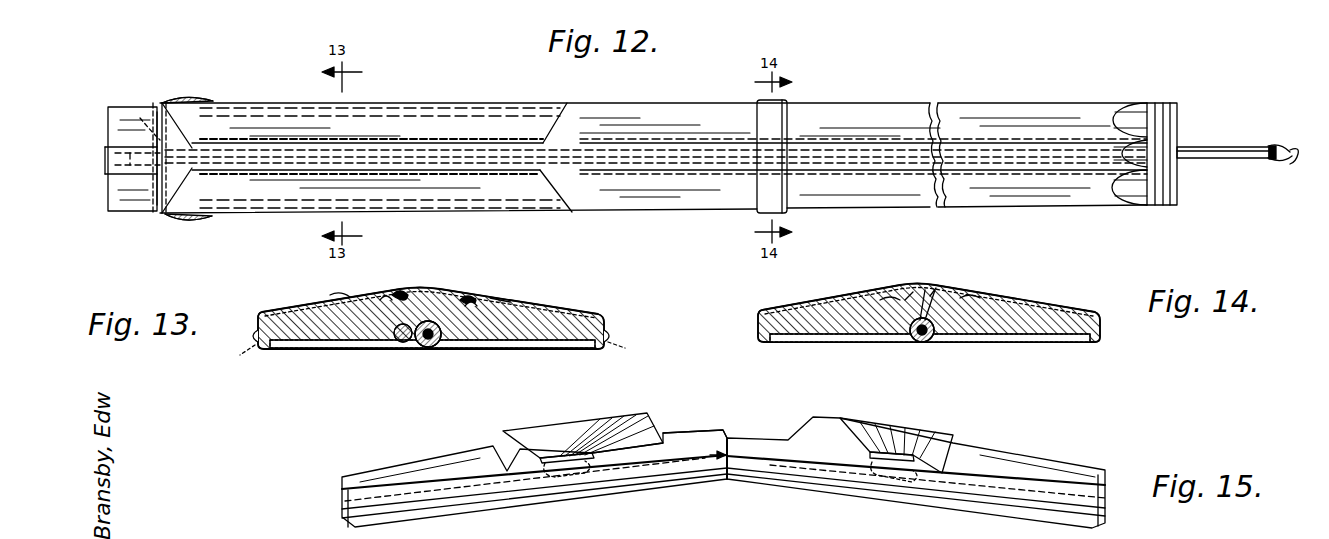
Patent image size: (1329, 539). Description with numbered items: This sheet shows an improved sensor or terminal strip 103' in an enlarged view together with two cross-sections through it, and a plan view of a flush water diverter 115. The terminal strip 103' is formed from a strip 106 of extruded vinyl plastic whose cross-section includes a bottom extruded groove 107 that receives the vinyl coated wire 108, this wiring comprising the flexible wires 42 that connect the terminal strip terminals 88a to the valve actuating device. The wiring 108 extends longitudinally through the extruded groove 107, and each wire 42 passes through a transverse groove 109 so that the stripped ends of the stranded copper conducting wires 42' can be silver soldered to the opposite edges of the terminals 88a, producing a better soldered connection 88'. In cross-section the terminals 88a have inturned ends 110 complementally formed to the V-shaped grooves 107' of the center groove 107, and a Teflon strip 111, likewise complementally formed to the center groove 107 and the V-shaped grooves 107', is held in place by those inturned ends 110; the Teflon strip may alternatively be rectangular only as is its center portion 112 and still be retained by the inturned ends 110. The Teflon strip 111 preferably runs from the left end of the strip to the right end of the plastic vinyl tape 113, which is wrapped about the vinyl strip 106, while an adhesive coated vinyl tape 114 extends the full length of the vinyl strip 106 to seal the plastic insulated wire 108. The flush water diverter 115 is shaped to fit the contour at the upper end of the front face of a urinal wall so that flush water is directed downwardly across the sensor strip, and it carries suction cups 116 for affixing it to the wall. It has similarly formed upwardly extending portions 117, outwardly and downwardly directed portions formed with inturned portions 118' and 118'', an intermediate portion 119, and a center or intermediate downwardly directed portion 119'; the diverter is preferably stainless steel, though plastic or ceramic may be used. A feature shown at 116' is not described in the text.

In FIG. 12, the flexible wires 42 is at (702, 155).
In FIG. 13, the flexible wires 42 is at (426, 371).
In FIG. 14, the flexible wires 42 is at (917, 358).
In FIG. 12, the conducting wires 42' is at (720, 160).
In FIG. 13, the conducting wires 42' is at (427, 315).
In FIG. 14, the conducting wires 42' is at (936, 285).
In FIG. 12, the soldered connection 88' is at (191, 156).
In FIG. 13, the soldered connection 88' is at (419, 329).
In FIG. 12, the terminal strip terminals 88a is at (415, 130).
In FIG. 13, the terminal strip terminals 88a is at (295, 309).
In FIG. 12, the improved sensor or terminal strip 103' is at (653, 141).
In FIG. 13, the improved sensor or terminal strip 103' is at (431, 306).
In FIG. 14, the improved sensor or terminal strip 103' is at (929, 302).
In FIG. 12, the strip of extruded vinyl plastic 106 is at (961, 106).
In FIG. 13, the strip of extruded vinyl plastic 106 is at (520, 295).
In FIG. 14, the strip of extruded vinyl plastic 106 is at (1045, 310).
In FIG. 12, the bottom extruded groove 107 is at (1059, 112).
In FIG. 13, the bottom extruded groove 107 is at (399, 323).
In FIG. 14, the bottom extruded groove 107 is at (992, 358).
In FIG. 13, the V-shaped grooves 107' is at (507, 285).
In FIG. 14, the V-shaped grooves 107' is at (925, 282).
In FIG. 12, the vinyl coated wire 108 is at (1218, 146).
In FIG. 13, the vinyl coated wire 108 is at (418, 348).
In FIG. 14, the vinyl coated wire 108 is at (920, 343).
In FIG. 12, the transverse groove 109 is at (152, 130).
In FIG. 13, the transverse groove 109 is at (345, 345).
In FIG. 12, the inturned ends 110 is at (500, 134).
In FIG. 13, the inturned ends 110 is at (385, 296).
In FIG. 12, the Teflon strip 111 is at (680, 166).
In FIG. 13, the Teflon strip 111 is at (445, 300).
In FIG. 14, the Teflon strip 111 is at (955, 300).
In FIG. 13, the center portion 112 is at (410, 292).
In FIG. 14, the center portion 112 is at (916, 295).
In FIG. 12, the plastic vinyl tape 113 is at (785, 128).
In FIG. 14, the plastic vinyl tape 113 is at (778, 310).
In FIG. 13, the adhesive coated vinyl tape 114 is at (311, 345).
In FIG. 14, the adhesive coated vinyl tape 114 is at (930, 338).
In FIG. 15, the flush water diverter 115 is at (780, 484).
In FIG. 15, the suction cups 116 is at (728, 434).
In FIG. 15, the wedge face 116' is at (656, 402).
In FIG. 15, the upwardly extending portions 117 is at (535, 501).
In FIG. 15, the inturned portion 118' is at (811, 402).
In FIG. 15, the inturned portion 118'' is at (727, 454).
In FIG. 15, the intermediate portion 119 is at (705, 476).
In FIG. 15, the center or intermediate downwardly directed portion 119' is at (698, 420).